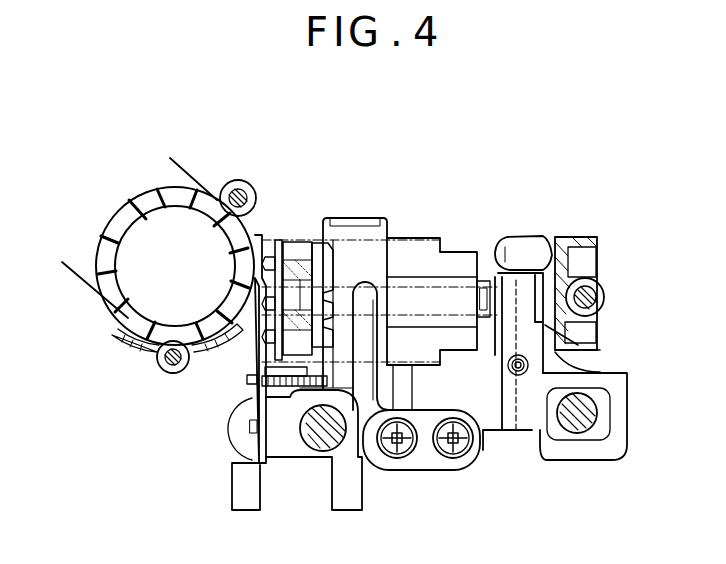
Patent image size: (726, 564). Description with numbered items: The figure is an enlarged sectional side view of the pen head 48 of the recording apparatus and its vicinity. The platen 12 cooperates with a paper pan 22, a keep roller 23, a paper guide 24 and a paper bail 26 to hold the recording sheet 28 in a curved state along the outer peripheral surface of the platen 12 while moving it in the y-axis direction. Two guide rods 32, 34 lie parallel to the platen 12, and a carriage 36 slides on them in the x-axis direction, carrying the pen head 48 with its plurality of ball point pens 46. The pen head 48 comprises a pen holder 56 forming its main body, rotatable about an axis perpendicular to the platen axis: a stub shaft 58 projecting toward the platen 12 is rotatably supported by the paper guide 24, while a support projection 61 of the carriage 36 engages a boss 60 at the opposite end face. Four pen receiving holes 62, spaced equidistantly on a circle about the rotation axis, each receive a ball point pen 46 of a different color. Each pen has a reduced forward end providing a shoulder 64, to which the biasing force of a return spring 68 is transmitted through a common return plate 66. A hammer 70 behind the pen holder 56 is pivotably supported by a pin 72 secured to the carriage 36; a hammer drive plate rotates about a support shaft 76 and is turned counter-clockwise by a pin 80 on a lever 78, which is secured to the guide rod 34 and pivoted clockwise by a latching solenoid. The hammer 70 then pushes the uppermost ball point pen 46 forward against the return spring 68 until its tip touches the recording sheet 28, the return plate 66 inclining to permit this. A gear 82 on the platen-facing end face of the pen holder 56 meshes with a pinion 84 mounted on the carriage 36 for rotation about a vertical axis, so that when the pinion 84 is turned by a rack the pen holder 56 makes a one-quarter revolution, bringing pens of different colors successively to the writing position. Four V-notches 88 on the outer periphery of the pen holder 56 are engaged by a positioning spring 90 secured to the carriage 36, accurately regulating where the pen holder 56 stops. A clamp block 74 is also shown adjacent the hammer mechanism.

The platen 12 is at (150, 197).
The paper pan 22 is at (145, 338).
The keep roller 23 is at (165, 367).
The paper guide 24 is at (257, 334).
The paper bail 26 is at (241, 181).
The recording sheet 28 is at (188, 178).
The guide rod 32 is at (318, 445).
The guide rod 34 is at (585, 432).
The carriage 36 is at (504, 443).
The ball point pen 46 is at (458, 246).
The pen head 48 is at (429, 160).
The pen holder 56 is at (368, 218).
The stub shaft 58 is at (285, 300).
The boss 60 is at (482, 281).
The support projection 61 is at (486, 293).
The pen receiving hole 62 is at (353, 215).
The shoulder 64 is at (304, 240).
The return plate 66 is at (297, 236).
The return spring 68 is at (290, 250).
The hammer 70 is at (532, 240).
The pin 72 is at (520, 437).
The clamp block 74 is at (586, 240).
The support shaft 76 is at (602, 300).
The lever 78 is at (585, 362).
The pin 80 is at (600, 368).
The gear 82 is at (319, 241).
The pinion 84 is at (250, 388).
The V-notch 88 is at (388, 275).
The positioning spring 90 is at (364, 455).